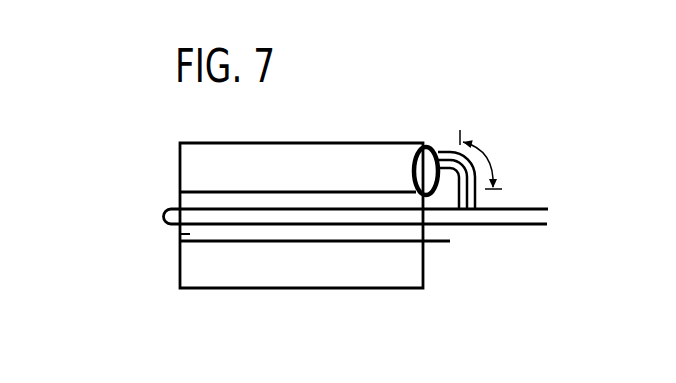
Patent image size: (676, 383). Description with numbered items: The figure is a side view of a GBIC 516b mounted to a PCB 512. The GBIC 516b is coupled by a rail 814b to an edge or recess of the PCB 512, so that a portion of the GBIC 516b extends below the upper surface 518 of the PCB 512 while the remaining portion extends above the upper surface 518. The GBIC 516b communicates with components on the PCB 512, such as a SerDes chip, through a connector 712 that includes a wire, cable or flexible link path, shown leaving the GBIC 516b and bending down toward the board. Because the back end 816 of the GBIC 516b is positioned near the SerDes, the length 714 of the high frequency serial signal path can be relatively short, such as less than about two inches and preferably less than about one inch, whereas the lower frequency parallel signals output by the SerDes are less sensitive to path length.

The GBIC 516b is at (185, 174).
The rail 814b is at (190, 234).
The connector 712 is at (427, 145).
The length of the signal path 714 is at (486, 154).
The upper surface of the PCB 518 is at (528, 207).
The PCB 512 is at (507, 218).
The back end of the GBIC 816 is at (415, 262).